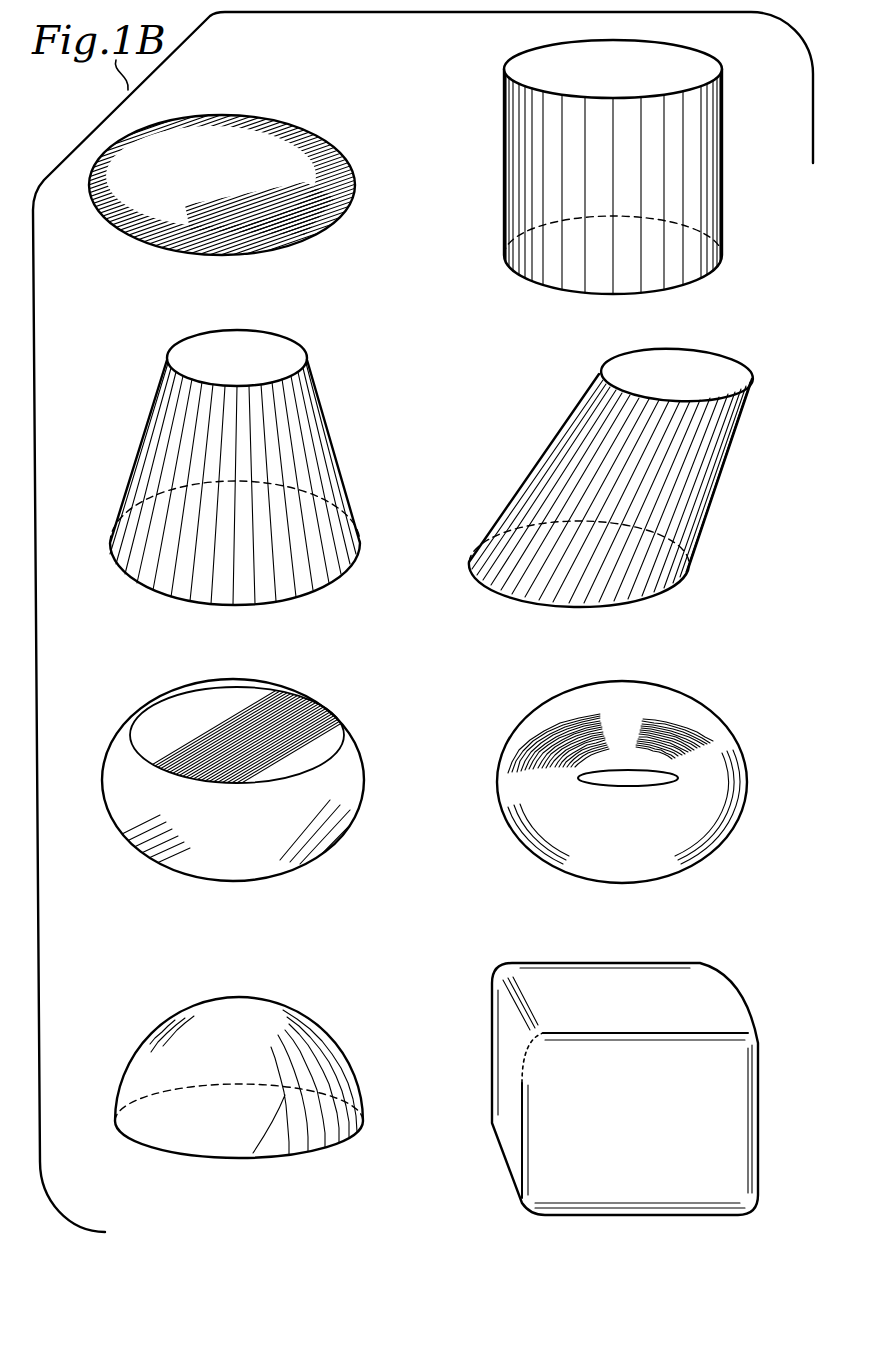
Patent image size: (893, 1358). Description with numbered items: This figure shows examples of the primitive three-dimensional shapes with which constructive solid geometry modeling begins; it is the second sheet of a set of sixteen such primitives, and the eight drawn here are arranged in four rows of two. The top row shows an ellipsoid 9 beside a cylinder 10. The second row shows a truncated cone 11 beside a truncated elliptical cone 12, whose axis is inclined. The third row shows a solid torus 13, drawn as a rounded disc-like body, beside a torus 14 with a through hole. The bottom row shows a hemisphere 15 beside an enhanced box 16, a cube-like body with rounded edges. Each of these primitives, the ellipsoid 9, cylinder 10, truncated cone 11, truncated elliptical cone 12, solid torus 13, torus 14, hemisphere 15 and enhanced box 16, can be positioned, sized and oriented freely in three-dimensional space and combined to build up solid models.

The ellipsoid 9 is at (328, 145).
The cylinder 10 is at (722, 150).
The truncated cone 11 is at (147, 445).
The truncated elliptical cone 12 is at (722, 480).
The solid torus 13 is at (147, 710).
The torus 14 is at (710, 705).
The hemisphere 15 is at (127, 1065).
The enhanced box 16 is at (733, 1010).